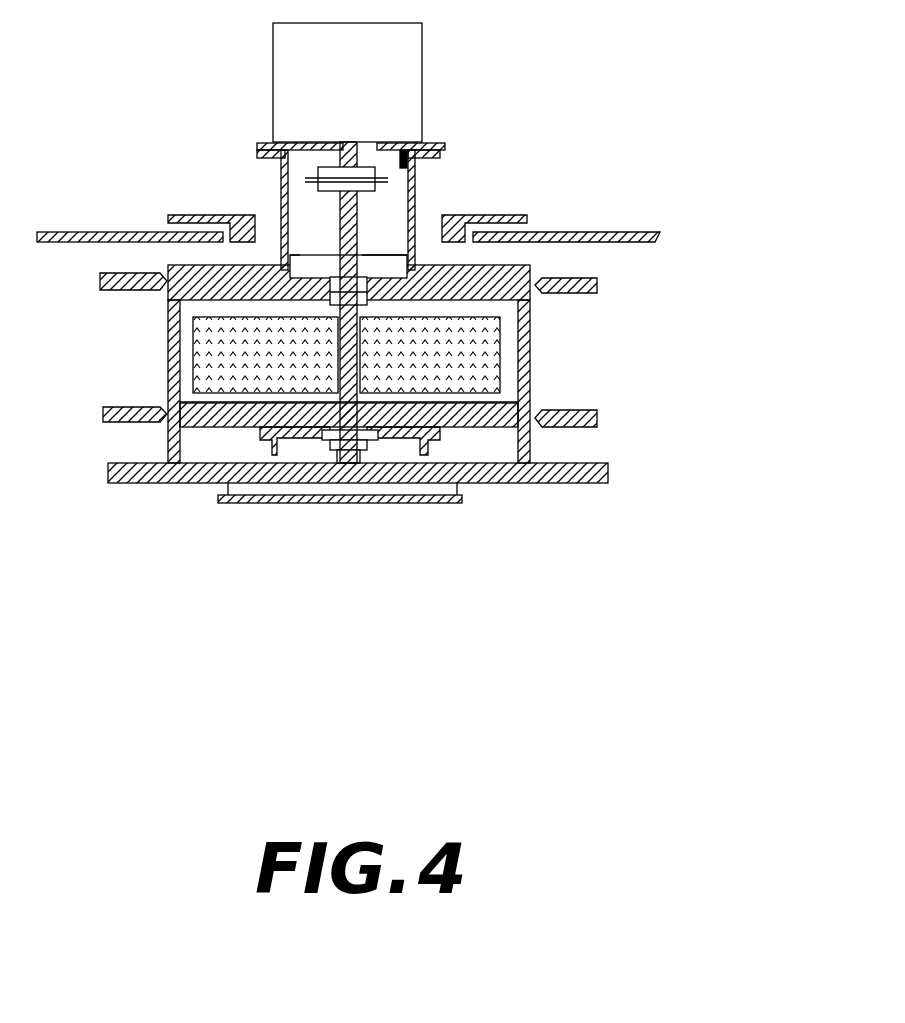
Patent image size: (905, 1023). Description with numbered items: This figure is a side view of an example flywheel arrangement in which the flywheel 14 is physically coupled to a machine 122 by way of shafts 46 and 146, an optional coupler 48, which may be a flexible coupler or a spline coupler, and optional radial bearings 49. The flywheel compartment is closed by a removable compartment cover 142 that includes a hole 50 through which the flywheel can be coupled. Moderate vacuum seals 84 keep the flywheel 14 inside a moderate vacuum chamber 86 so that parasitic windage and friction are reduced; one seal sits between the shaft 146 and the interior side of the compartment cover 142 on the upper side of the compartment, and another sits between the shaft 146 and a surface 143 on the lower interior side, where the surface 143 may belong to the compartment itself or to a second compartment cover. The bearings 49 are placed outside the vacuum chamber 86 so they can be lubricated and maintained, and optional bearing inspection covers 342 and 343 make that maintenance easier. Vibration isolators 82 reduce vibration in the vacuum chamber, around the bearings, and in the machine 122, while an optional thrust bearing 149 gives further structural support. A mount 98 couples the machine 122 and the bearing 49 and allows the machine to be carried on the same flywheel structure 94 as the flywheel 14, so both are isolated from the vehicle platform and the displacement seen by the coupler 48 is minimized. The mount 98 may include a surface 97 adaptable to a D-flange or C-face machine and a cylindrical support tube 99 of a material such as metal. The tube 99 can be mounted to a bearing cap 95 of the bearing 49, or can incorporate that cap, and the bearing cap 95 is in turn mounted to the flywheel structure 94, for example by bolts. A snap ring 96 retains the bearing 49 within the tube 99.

The machine 122 is at (372, 116).
The shaft 46 is at (333, 157).
The coupler 48 is at (300, 169).
The radial bearing 49 is at (320, 268).
The hole 50 is at (338, 198).
The compartment cover 142 is at (660, 237).
The shaft 146 is at (272, 240).
The bearing inspection cover 342 is at (442, 214).
The snap ring 96 is at (407, 250).
The surface 97 is at (443, 155).
The mount 98 is at (432, 176).
The cylindrical support tube 99 is at (418, 225).
The bearing cap 95 is at (407, 258).
The vibration isolator 82 is at (597, 284).
The flywheel structure 94 is at (548, 335).
The vacuum seal 84 is at (315, 308).
The vacuum chamber 86 is at (195, 398).
The flywheel 14 is at (480, 371).
The thrust bearing 149 is at (347, 457).
The surface 143 is at (527, 486).
The bearing inspection cover 343 is at (240, 502).